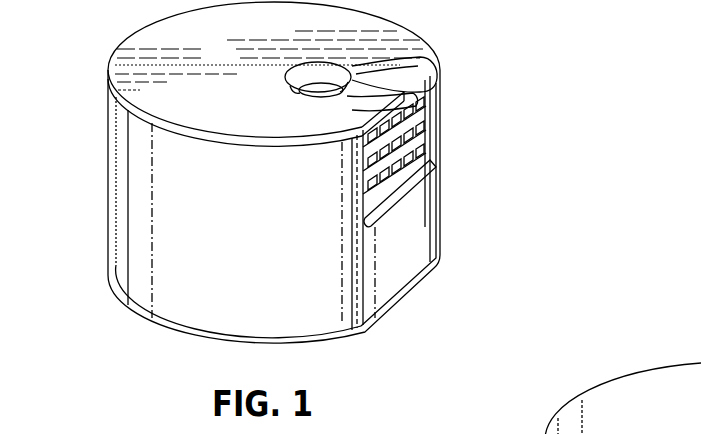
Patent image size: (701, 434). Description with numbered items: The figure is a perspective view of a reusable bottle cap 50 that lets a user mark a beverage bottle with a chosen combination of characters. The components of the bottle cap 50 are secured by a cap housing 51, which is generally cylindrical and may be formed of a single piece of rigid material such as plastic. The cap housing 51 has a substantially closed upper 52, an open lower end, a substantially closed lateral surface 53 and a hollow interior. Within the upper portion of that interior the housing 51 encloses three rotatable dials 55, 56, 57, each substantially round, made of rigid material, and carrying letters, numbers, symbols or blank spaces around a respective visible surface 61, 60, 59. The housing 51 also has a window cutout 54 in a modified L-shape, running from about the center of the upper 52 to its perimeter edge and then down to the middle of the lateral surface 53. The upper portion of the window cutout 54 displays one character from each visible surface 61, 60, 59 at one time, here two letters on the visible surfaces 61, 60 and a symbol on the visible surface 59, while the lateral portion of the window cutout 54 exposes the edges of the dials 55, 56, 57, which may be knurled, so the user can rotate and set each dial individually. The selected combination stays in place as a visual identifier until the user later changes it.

The reusable bottle cap 50 is at (574, 108).
The cap housing 51 is at (115, 138).
The upper 52 is at (233, 63).
The lateral surface 53 is at (223, 238).
The window cutout 54 is at (436, 62).
The rotatable dial 55 is at (410, 120).
The rotatable dial 56 is at (410, 147).
The rotatable dial 57 is at (408, 185).
The visible surface 59 is at (300, 80).
The visible surface 60 is at (367, 95).
The visible surface 61 is at (420, 93).